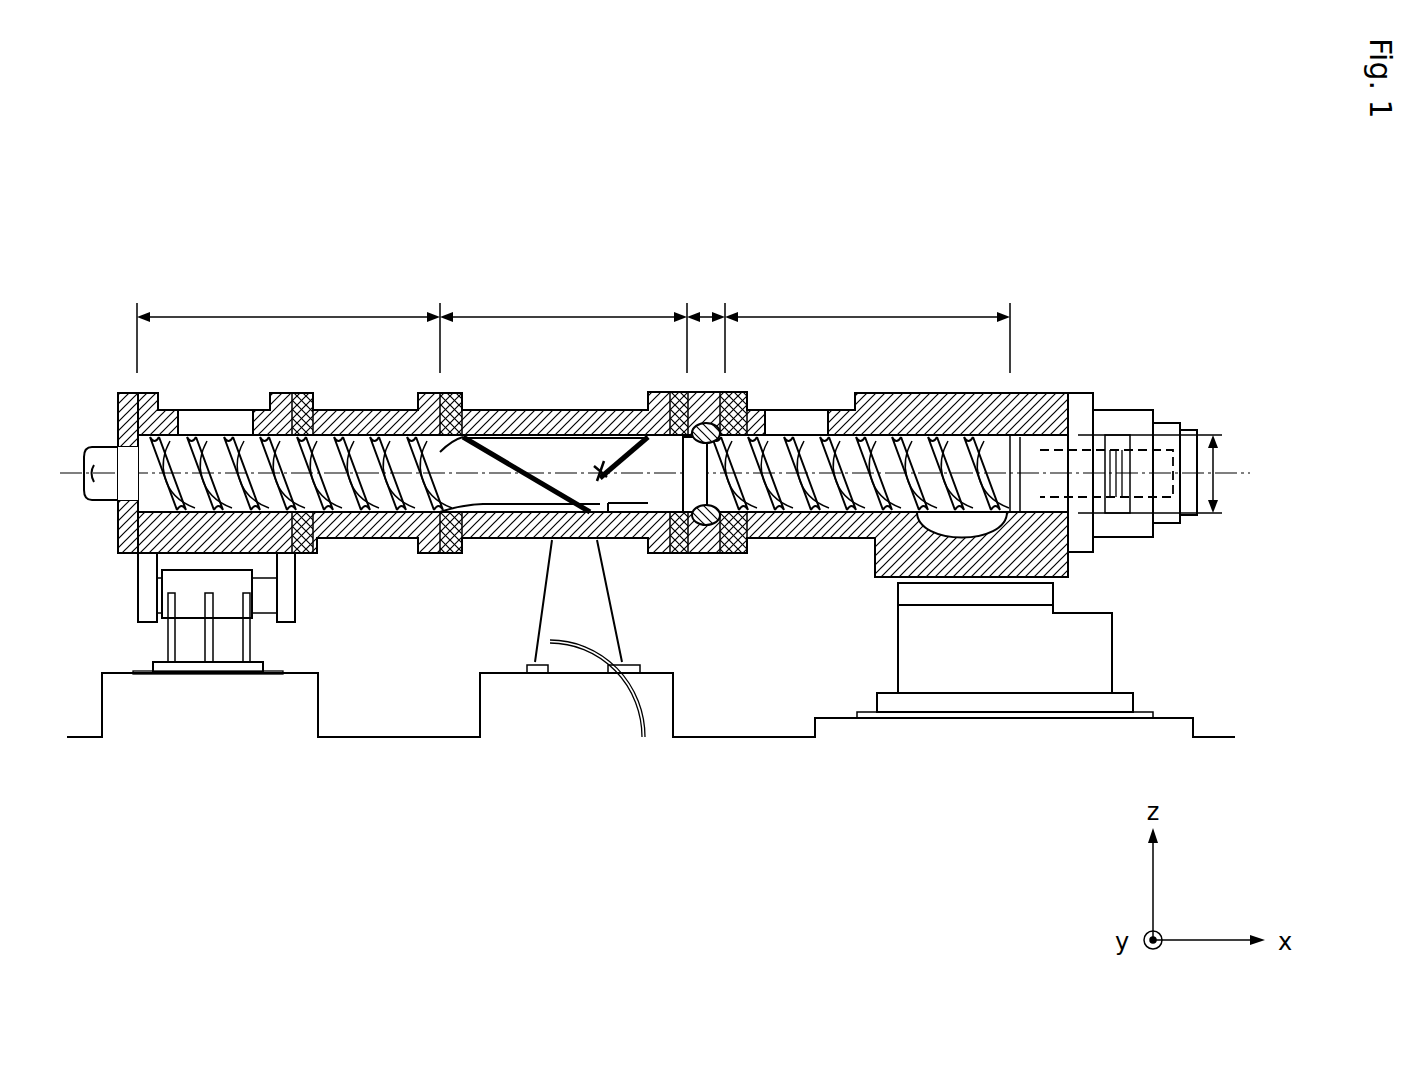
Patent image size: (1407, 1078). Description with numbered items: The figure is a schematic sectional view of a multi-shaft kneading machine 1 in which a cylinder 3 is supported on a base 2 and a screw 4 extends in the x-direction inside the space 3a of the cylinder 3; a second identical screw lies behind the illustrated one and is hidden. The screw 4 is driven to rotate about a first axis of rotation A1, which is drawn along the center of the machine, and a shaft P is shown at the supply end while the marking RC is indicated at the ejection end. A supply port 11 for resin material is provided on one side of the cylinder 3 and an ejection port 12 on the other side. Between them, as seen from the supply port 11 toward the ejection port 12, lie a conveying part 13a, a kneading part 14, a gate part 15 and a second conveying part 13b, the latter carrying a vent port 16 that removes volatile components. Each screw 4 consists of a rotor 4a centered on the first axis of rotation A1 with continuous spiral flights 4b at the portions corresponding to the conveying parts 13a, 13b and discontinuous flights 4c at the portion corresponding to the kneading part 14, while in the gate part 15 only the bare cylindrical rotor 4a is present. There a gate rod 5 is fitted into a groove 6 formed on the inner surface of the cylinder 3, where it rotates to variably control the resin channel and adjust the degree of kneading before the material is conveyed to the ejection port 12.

The multi-shaft kneading machine 1 is at (622, 264).
The base 2 is at (492, 672).
The cylinder 3 is at (386, 540).
The space of cylinder 3a is at (641, 514).
The screw 4 is at (500, 488).
The rotor 4a is at (548, 448).
The flights 4b is at (322, 458).
The discontinuous flights 4c is at (613, 452).
The gate rod 5 is at (702, 428).
The groove 6 is at (687, 492).
The supply port 11 is at (210, 410).
The ejection port 12 is at (972, 522).
The conveying part 13a is at (288, 328).
The conveying part 13b is at (867, 328).
The kneading part 14 is at (563, 325).
The gate part 15 is at (701, 325).
The vent port 16 is at (790, 410).
The drive shaft P is at (80, 473).
The rotation center RC is at (1236, 470).
The first axis of rotation A1 is at (1271, 474).